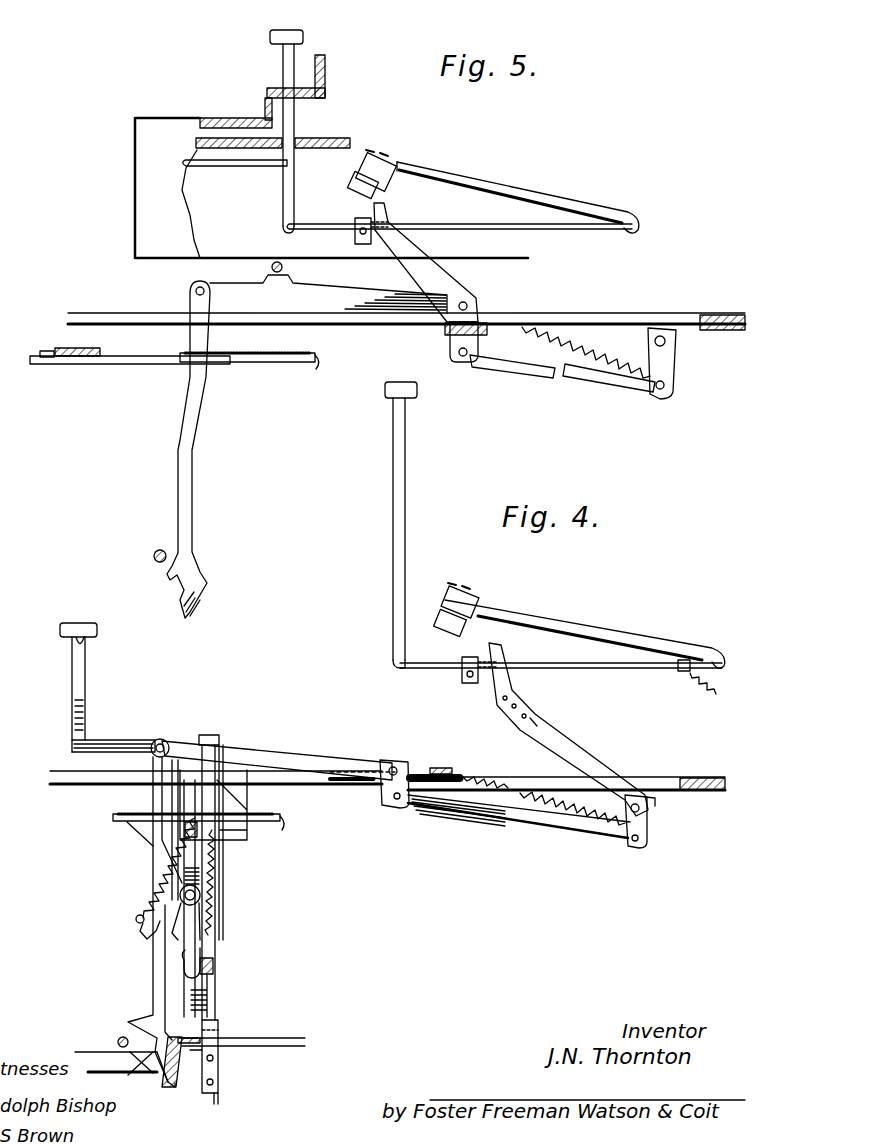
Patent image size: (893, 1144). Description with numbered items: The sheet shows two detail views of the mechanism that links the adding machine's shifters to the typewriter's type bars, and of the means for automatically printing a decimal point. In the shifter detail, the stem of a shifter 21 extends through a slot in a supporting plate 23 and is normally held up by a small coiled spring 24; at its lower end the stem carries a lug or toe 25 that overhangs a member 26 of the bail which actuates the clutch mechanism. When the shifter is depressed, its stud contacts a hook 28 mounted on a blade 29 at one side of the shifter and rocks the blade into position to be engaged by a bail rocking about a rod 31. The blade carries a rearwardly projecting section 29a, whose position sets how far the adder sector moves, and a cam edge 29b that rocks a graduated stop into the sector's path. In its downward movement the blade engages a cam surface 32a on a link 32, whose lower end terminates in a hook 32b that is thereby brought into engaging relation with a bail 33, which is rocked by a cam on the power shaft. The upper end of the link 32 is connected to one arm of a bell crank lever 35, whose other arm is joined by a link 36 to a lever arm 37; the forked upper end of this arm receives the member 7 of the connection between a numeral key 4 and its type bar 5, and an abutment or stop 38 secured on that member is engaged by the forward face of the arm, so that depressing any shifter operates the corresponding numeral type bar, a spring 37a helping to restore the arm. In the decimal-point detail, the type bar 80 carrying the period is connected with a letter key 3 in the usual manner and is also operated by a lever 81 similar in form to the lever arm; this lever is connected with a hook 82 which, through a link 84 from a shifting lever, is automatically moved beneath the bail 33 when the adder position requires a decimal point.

In FIG. 5, the letter key 3 is at (283, 66).
In FIG. 4, the numeral key 4 is at (393, 523).
In FIG. 4, the type bar 5 is at (553, 619).
In FIG. 4, the link 7 is at (578, 677).
In FIG. 4, the shifter 21 is at (86, 681).
In FIG. 5, the supporting plate 23 is at (263, 365).
In FIG. 4, the supporting plate 23 is at (280, 820).
In FIG. 4, the coiled spring 24 is at (212, 876).
In FIG. 4, the lug or toe 25 is at (220, 1076).
In FIG. 4, the member of bail 26 is at (182, 1088).
In FIG. 4, the hook 28 is at (214, 962).
In FIG. 4, the blade 29 is at (196, 858).
In FIG. 4, the rearwardly projecting section 29a is at (240, 838).
In FIG. 4, the cam edge 29b is at (212, 972).
In FIG. 4, the rod 31 is at (145, 900).
In FIG. 4, the link 32 is at (153, 982).
In FIG. 4, the cam surface 32a is at (177, 900).
In FIG. 4, the hook 32b is at (157, 1068).
In FIG. 5, the bail 33 is at (153, 556).
In FIG. 4, the bail 33 is at (119, 1038).
In FIG. 4, the bell crank lever 35 is at (271, 752).
In FIG. 4, the link 36 is at (548, 832).
In FIG. 4, the lever arm 37 is at (573, 752).
In FIG. 4, the spring 37a is at (534, 790).
In FIG. 4, the abutment or stop 38 is at (466, 686).
In FIG. 5, the type bar 80 is at (522, 190).
In FIG. 5, the lever 81 is at (456, 292).
In FIG. 5, the hook 82 is at (193, 449).
In FIG. 5, the link 84 is at (113, 365).